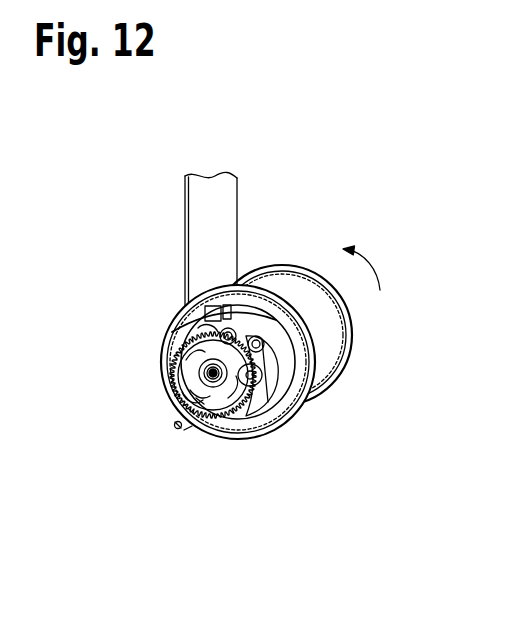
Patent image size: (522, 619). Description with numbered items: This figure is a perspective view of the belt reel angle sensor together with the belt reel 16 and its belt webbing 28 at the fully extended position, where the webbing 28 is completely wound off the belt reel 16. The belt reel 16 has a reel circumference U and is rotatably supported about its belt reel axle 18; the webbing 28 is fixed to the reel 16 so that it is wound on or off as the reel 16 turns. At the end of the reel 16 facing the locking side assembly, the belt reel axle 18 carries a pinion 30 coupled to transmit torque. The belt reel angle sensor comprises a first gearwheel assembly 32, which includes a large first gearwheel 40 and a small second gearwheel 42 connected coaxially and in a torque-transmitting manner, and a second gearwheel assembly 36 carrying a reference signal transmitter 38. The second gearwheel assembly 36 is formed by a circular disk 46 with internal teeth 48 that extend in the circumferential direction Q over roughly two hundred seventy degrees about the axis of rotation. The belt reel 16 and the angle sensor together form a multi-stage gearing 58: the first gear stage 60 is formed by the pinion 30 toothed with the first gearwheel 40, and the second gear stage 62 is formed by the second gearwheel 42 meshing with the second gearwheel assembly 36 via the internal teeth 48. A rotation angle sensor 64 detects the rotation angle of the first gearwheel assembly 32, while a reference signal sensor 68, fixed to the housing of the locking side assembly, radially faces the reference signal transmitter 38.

The belt reel 16 is at (298, 296).
The belt reel axle 18 is at (222, 388).
The belt webbing 28 is at (197, 226).
The pinion 30 is at (213, 373).
The first gearwheel assembly 32 is at (236, 318).
The second gearwheel assembly 36 is at (253, 334).
The reference signal transmitter 38 is at (263, 363).
The first gearwheel 40 is at (209, 372).
The second gearwheel 42 is at (222, 349).
The circular disk 46 is at (260, 392).
The internal teeth 48 is at (200, 395).
The multi-stage gearing 58 is at (184, 428).
The first gear stage 60 is at (195, 385).
The second gear stage 62 is at (200, 313).
The rotation angle sensor 64 is at (208, 336).
The reference signal sensor 68 is at (173, 424).
The circumferential direction Q is at (380, 298).
The reel circumference U is at (340, 335).